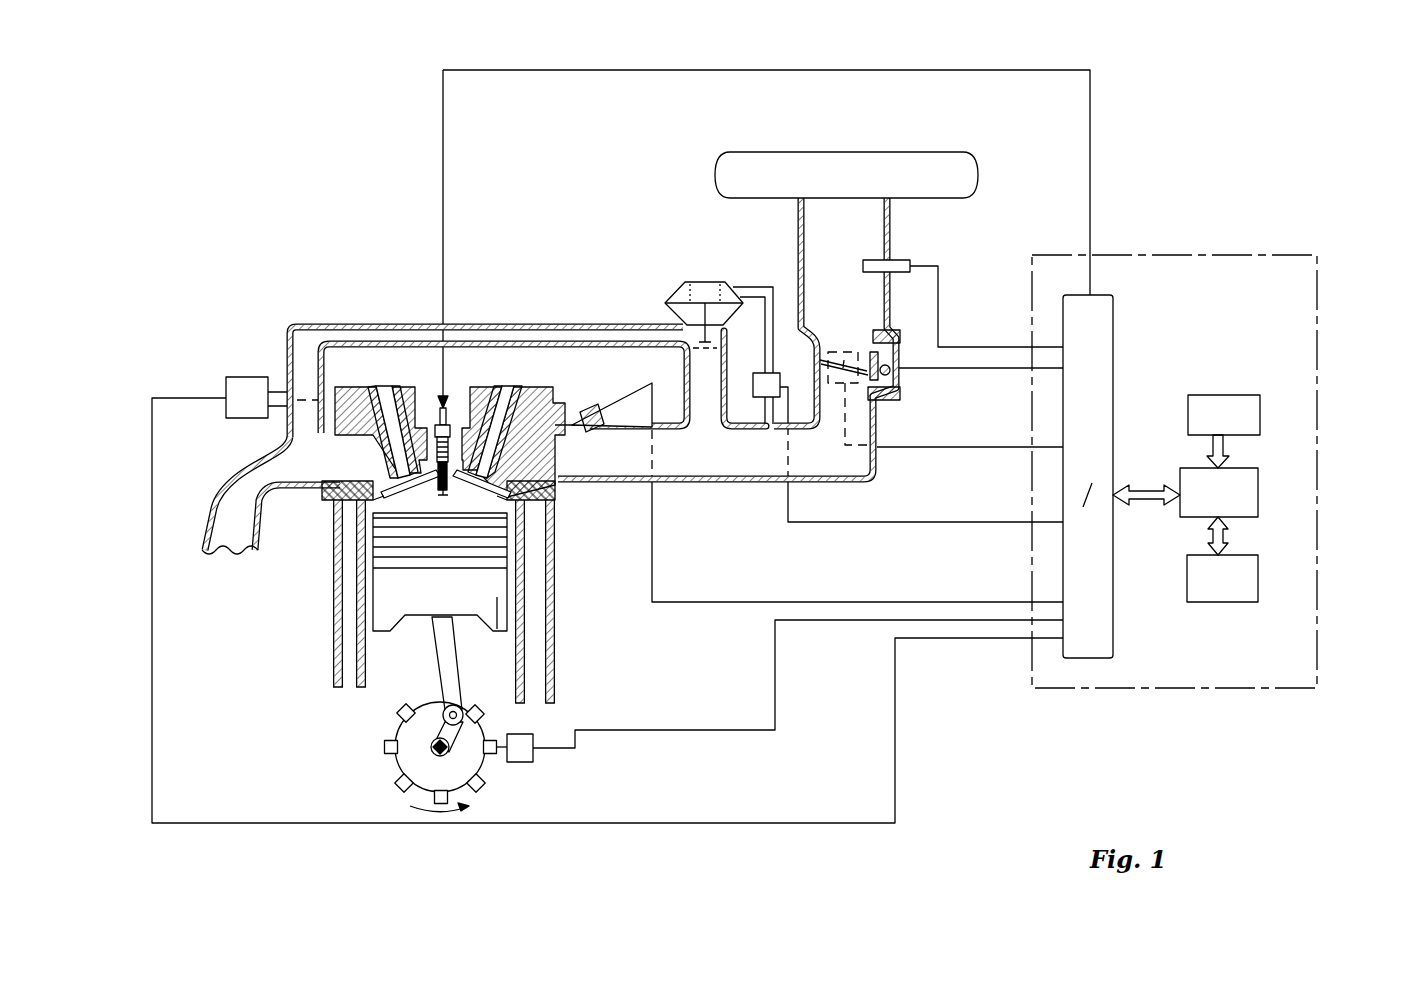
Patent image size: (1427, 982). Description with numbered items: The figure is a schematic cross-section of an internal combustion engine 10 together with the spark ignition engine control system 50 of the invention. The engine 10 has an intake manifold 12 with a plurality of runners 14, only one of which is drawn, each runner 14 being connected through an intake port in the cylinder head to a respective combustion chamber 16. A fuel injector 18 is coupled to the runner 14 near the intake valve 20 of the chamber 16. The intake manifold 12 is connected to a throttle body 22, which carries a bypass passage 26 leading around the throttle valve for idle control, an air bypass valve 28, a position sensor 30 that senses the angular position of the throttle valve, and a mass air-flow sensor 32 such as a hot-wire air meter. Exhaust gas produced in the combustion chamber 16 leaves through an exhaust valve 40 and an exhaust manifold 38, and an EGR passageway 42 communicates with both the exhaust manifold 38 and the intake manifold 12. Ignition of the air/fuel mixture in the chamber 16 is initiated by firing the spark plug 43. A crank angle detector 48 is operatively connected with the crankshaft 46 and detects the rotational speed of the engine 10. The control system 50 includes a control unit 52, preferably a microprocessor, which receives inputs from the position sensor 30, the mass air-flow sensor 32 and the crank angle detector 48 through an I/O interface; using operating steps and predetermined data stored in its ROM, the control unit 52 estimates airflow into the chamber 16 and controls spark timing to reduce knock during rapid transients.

The internal combustion engine 10 is at (240, 290).
The intake manifold 12 is at (738, 489).
The runner 14 is at (635, 485).
The combustion chamber 16 is at (515, 657).
The fuel injector 18 is at (615, 420).
The intake valve 20 is at (558, 490).
The throttle body 22 is at (805, 275).
The bypass passage 26 is at (900, 363).
The air bypass valve 28 is at (895, 395).
The position sensor 30 is at (843, 350).
The mass air-flow sensor 32 is at (866, 257).
The exhaust manifold 38 is at (215, 483).
The exhaust valve 40 is at (330, 503).
The EGR passageway 42 is at (396, 323).
The spark plug 43 is at (437, 425).
The crankshaft 46 is at (397, 768).
The crank angle detector 48 is at (533, 755).
The spark ignition engine control system 50 is at (1336, 528).
The control unit 52 is at (1243, 273).